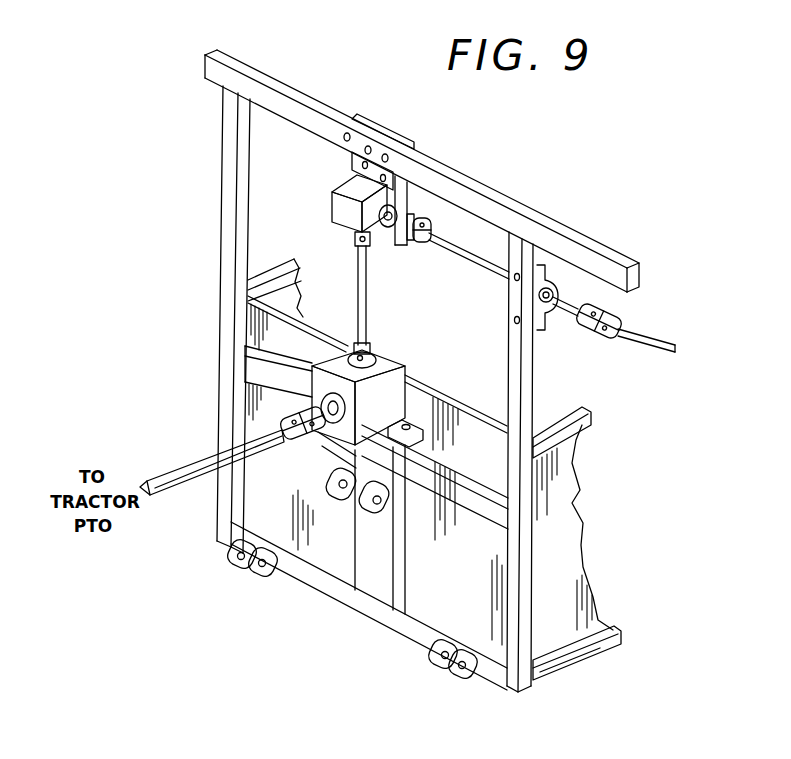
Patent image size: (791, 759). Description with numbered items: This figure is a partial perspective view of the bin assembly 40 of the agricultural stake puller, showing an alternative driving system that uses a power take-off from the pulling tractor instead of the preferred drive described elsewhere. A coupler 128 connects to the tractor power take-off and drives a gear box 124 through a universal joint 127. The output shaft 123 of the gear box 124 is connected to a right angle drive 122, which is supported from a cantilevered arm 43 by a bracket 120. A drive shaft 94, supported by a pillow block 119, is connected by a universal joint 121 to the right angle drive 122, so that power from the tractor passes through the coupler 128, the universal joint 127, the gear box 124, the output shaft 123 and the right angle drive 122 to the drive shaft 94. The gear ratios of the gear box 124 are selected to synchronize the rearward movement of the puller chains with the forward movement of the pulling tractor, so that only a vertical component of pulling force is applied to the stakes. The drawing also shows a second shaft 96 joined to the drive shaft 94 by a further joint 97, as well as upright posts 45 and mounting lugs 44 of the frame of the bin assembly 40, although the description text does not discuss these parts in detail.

The bin assembly 40 is at (600, 497).
The cantilevered arm 43 is at (502, 197).
The mounting lugs 44 is at (352, 487).
The upright posts 45 is at (227, 250).
The drive shaft 94 is at (475, 258).
The drive shaft 96 is at (652, 347).
The universal joint 97 is at (603, 337).
The pillow block 119 is at (547, 310).
The bracket 120 is at (413, 195).
The universal joint 121 is at (423, 238).
The right angle drive 122 is at (347, 222).
The output shaft 123 is at (358, 315).
The gear box 124 is at (388, 360).
The universal joint 127 is at (295, 440).
The coupler 128 is at (180, 490).